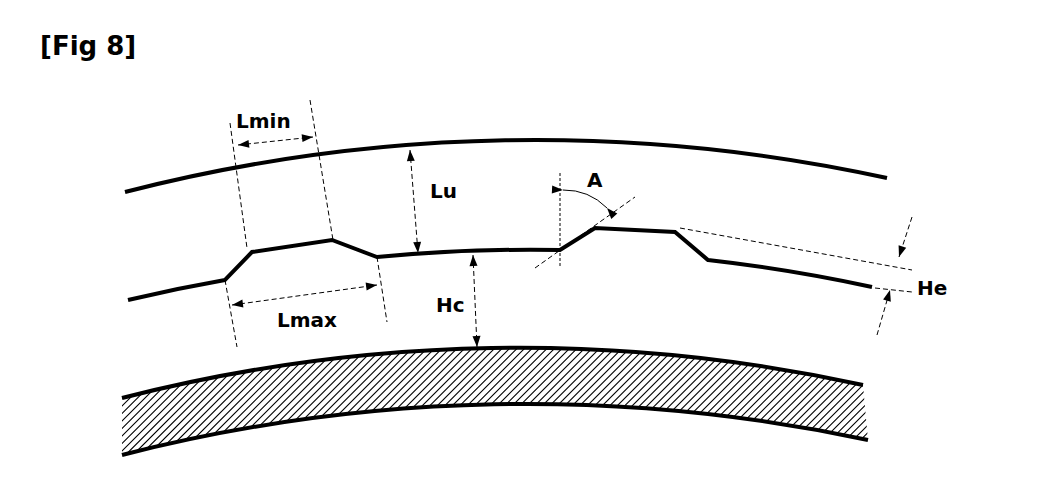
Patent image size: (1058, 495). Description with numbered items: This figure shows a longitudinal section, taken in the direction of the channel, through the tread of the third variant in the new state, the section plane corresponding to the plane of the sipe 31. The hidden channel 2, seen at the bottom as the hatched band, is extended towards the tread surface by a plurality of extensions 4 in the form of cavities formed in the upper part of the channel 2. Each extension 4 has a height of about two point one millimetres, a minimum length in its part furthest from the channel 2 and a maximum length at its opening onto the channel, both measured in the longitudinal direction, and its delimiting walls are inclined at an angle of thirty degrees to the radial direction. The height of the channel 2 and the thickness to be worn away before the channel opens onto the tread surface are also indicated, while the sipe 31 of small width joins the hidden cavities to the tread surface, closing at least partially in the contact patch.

The channel 2 is at (172, 338).
The extension 4 is at (263, 265).
The sipe 31 is at (807, 193).